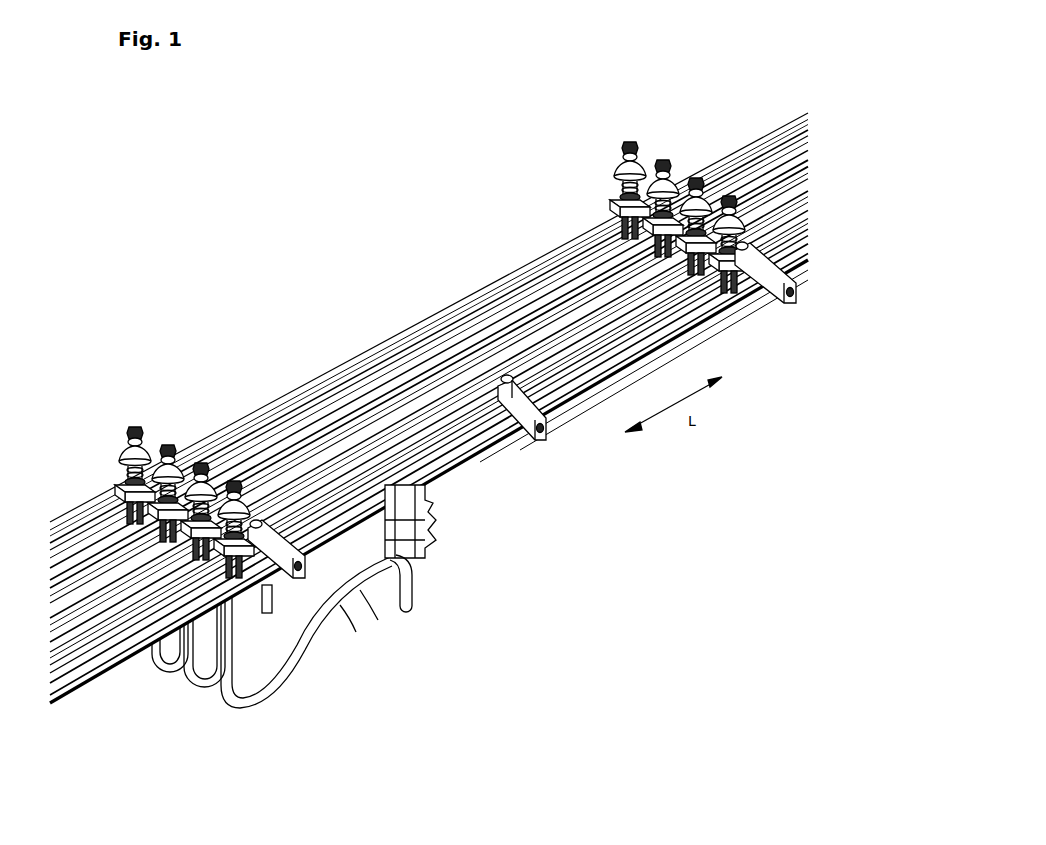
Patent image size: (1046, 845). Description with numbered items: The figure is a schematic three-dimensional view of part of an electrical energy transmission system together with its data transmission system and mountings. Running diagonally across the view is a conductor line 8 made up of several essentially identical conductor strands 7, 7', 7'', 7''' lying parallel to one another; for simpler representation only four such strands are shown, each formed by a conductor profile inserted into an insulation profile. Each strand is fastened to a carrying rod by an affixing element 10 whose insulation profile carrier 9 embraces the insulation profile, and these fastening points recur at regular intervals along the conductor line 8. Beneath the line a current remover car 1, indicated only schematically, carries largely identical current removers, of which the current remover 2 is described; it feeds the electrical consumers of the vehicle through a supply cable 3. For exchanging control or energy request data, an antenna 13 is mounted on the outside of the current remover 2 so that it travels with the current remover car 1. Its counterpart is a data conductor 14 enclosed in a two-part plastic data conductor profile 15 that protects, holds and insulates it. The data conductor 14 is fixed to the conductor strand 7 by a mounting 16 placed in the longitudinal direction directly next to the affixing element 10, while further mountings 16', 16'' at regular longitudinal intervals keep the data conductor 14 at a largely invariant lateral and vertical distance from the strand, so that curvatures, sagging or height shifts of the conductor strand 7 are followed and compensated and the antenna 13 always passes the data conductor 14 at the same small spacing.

The current remover car 1 is at (427, 553).
The current remover 2 is at (277, 647).
The supply cable 3 is at (413, 595).
The conductor strand 7 is at (429, 350).
The conductor strand 7' is at (429, 336).
The conductor strand 7'' is at (429, 331).
The conductor strand 7''' is at (429, 317).
The conductor line 8 is at (322, 346).
The insulation profile carrier 9 is at (157, 525).
The affixing element 10 is at (313, 628).
The antenna 13 is at (257, 650).
The data conductor 14 is at (257, 712).
The data conductor profile 15 is at (372, 615).
The mounting 16 is at (377, 647).
The mounting 16' is at (534, 441).
The mounting 16'' is at (775, 302).